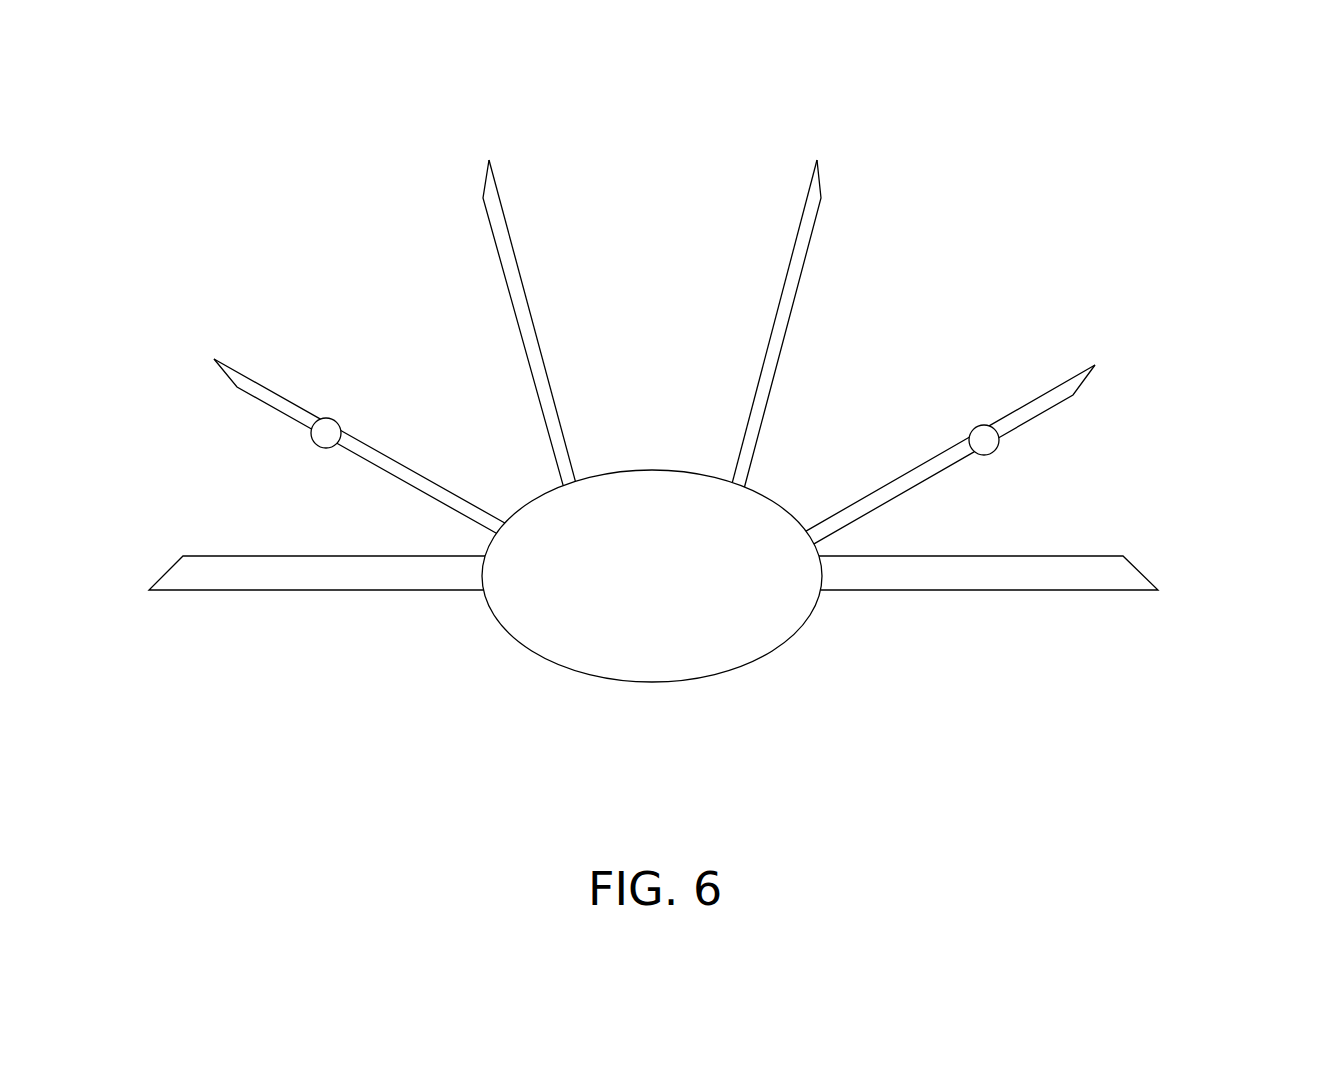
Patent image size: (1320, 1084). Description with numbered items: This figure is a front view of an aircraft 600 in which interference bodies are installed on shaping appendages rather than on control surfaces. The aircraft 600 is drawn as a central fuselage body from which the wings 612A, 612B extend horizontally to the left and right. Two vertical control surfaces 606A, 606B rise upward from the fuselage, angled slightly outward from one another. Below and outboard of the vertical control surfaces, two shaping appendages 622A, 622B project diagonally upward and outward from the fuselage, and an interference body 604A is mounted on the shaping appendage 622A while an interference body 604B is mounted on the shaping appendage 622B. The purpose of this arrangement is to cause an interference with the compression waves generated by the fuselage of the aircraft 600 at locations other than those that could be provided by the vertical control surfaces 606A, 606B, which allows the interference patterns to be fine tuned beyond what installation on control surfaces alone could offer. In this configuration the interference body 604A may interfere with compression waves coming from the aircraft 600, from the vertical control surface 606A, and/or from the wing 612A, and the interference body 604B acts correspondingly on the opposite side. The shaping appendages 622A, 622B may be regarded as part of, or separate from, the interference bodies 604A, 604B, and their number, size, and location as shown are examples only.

The aircraft 600 is at (775, 502).
The vertical control surface 606A is at (492, 172).
The vertical control surface 606B is at (820, 172).
The shaping appendage 622A is at (220, 362).
The shaping appendage 622B is at (1095, 365).
The interference body 604A is at (337, 418).
The interference body 604B is at (977, 428).
The wing 612A is at (207, 556).
The wing 612B is at (1072, 556).